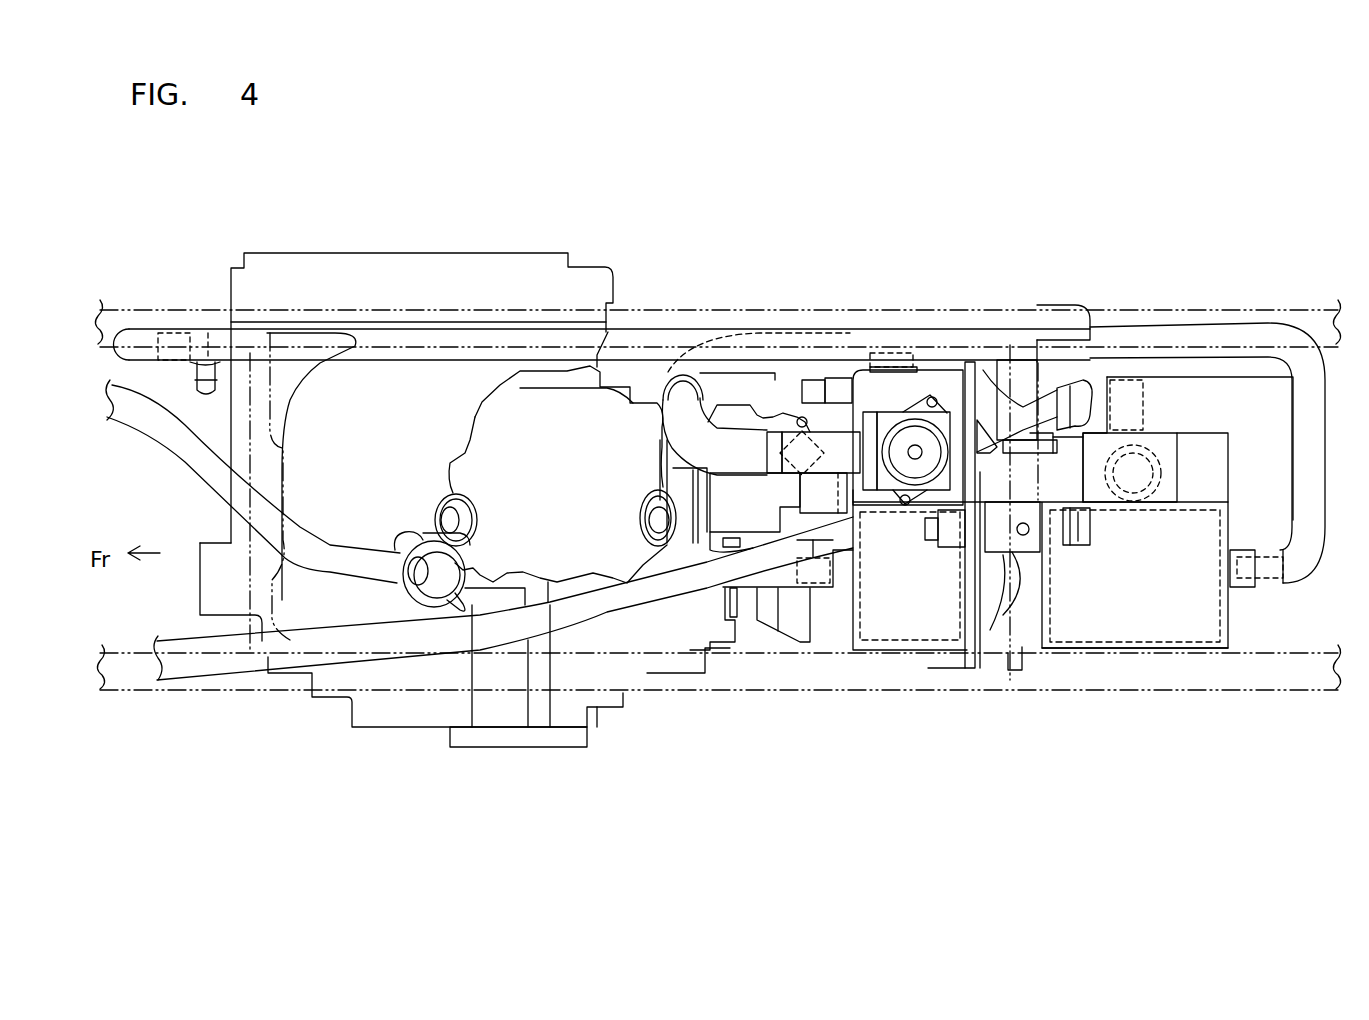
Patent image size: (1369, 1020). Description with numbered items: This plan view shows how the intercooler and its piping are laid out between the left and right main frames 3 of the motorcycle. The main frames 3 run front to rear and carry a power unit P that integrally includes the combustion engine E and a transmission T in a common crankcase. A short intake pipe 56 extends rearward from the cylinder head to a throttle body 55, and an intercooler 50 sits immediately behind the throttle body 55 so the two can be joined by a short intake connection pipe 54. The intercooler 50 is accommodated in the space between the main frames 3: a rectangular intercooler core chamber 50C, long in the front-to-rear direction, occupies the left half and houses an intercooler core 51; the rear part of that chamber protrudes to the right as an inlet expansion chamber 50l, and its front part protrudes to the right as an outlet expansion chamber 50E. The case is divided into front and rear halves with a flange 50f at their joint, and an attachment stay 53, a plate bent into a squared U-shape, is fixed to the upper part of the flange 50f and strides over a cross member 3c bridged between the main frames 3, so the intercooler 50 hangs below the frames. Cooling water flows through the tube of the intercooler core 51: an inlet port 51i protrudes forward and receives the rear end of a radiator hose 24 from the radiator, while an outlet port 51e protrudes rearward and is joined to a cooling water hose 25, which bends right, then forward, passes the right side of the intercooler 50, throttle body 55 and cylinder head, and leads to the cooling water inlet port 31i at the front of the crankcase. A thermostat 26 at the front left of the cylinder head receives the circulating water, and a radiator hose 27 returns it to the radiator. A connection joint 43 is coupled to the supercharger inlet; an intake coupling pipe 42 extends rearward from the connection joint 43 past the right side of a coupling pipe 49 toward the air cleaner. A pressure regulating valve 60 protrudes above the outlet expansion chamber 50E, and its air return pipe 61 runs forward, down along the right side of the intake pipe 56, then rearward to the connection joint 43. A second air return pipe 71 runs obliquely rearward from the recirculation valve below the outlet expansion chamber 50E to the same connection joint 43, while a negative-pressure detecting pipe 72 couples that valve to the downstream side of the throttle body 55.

The main frame 3 is at (731, 308).
The cross member 3c is at (1043, 582).
The radiator hose 24 is at (412, 640).
The cooling water hose 25 is at (643, 330).
The thermostat 26 is at (405, 597).
The radiator hose 27 is at (193, 468).
The cooling water inlet port 31i is at (178, 335).
The intake coupling pipe 42 is at (1203, 370).
The connection joint 43 is at (1097, 360).
The coupling pipe 49 is at (1162, 478).
The intercooler 50 is at (1008, 665).
The intercooler core chamber 50C is at (1062, 612).
The outlet expansion chamber 50E is at (873, 390).
The flange 50f is at (958, 560).
The inlet expansion chamber 50l is at (1160, 466).
The intercooler core 51 is at (1092, 650).
The outlet port 51e is at (1270, 585).
The inlet port 51i is at (817, 583).
The attachment stay 53 is at (1053, 538).
The intake connection pipe 54 is at (823, 490).
The throttle body 55 is at (747, 502).
The intake pipe 56 is at (698, 503).
The pressure regulating valve 60 is at (945, 388).
The air return pipe 61 is at (683, 380).
The air return pipe 71 is at (1015, 455).
The negative-pressure detecting pipe 72 is at (767, 537).
The internal combustion engine E is at (440, 385).
The power unit P is at (555, 556).
The transmission T is at (592, 612).